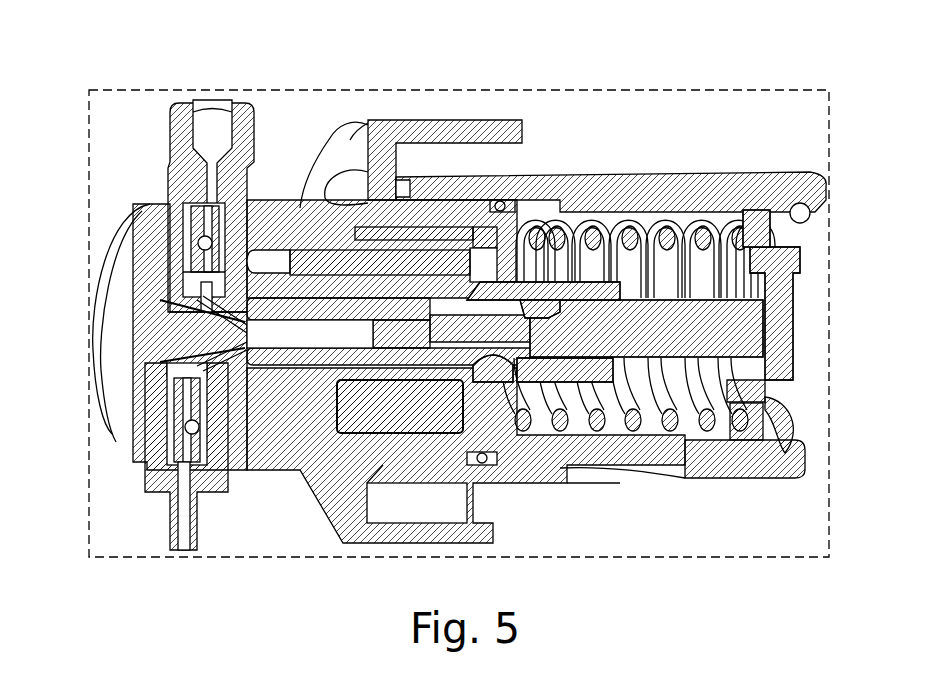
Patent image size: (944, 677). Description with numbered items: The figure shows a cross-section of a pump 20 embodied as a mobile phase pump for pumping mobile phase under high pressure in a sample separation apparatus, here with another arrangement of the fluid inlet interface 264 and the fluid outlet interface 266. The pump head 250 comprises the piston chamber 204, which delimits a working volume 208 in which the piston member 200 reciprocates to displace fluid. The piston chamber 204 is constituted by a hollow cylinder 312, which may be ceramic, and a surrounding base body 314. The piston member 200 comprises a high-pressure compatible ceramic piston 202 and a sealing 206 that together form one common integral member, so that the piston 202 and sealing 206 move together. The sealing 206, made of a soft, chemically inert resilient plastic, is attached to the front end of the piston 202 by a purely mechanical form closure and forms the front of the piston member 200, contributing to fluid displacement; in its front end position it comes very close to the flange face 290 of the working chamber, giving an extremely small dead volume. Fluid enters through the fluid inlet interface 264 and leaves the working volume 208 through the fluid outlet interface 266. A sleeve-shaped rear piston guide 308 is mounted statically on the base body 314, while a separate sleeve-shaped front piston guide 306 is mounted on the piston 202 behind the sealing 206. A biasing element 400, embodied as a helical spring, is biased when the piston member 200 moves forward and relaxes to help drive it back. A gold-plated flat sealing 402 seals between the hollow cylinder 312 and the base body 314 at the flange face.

The pump 20 is at (836, 180).
The pump head 250 is at (829, 90).
The piston member 200 is at (470, 330).
The piston 202 is at (560, 470).
The piston chamber 204 is at (348, 366).
The sealing 206 is at (370, 338).
The working volume 208 is at (517, 208).
The fluid inlet interface 264 is at (235, 345).
The fluid outlet interface 266 is at (222, 332).
The flange face 290 is at (250, 340).
The front piston guide 306 is at (495, 462).
The rear piston guide 308 is at (590, 432).
The hollow cylinder 312 is at (270, 310).
The base body 314 is at (305, 210).
The biasing element 400 is at (667, 232).
The flat sealing 402 is at (238, 362).